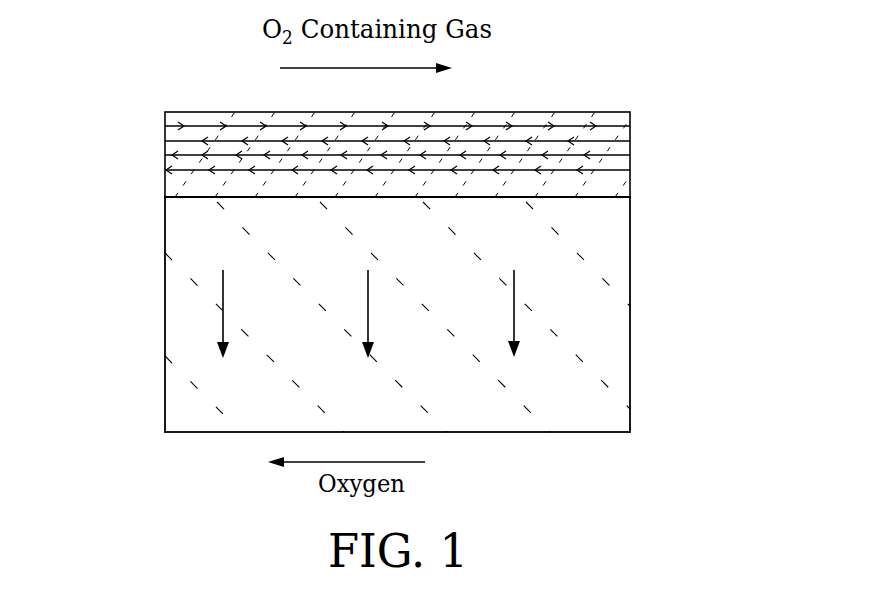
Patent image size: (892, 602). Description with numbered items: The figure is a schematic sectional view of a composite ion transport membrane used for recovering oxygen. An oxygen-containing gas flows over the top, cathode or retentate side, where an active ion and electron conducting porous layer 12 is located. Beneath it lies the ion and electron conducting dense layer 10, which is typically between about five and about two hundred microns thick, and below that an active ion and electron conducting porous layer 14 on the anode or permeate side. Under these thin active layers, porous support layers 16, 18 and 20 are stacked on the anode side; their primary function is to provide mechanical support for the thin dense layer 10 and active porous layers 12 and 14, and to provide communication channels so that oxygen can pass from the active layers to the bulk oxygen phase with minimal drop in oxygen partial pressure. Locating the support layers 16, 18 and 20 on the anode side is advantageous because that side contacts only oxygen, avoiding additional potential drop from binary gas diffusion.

The dense layer 10 is at (630, 141).
The active porous layer 12 is at (630, 111).
The active porous layer 14 is at (630, 155).
The porous support layer 16 is at (165, 170).
The porous support layer 18 is at (165, 183).
The porous support layer 20 is at (165, 313).